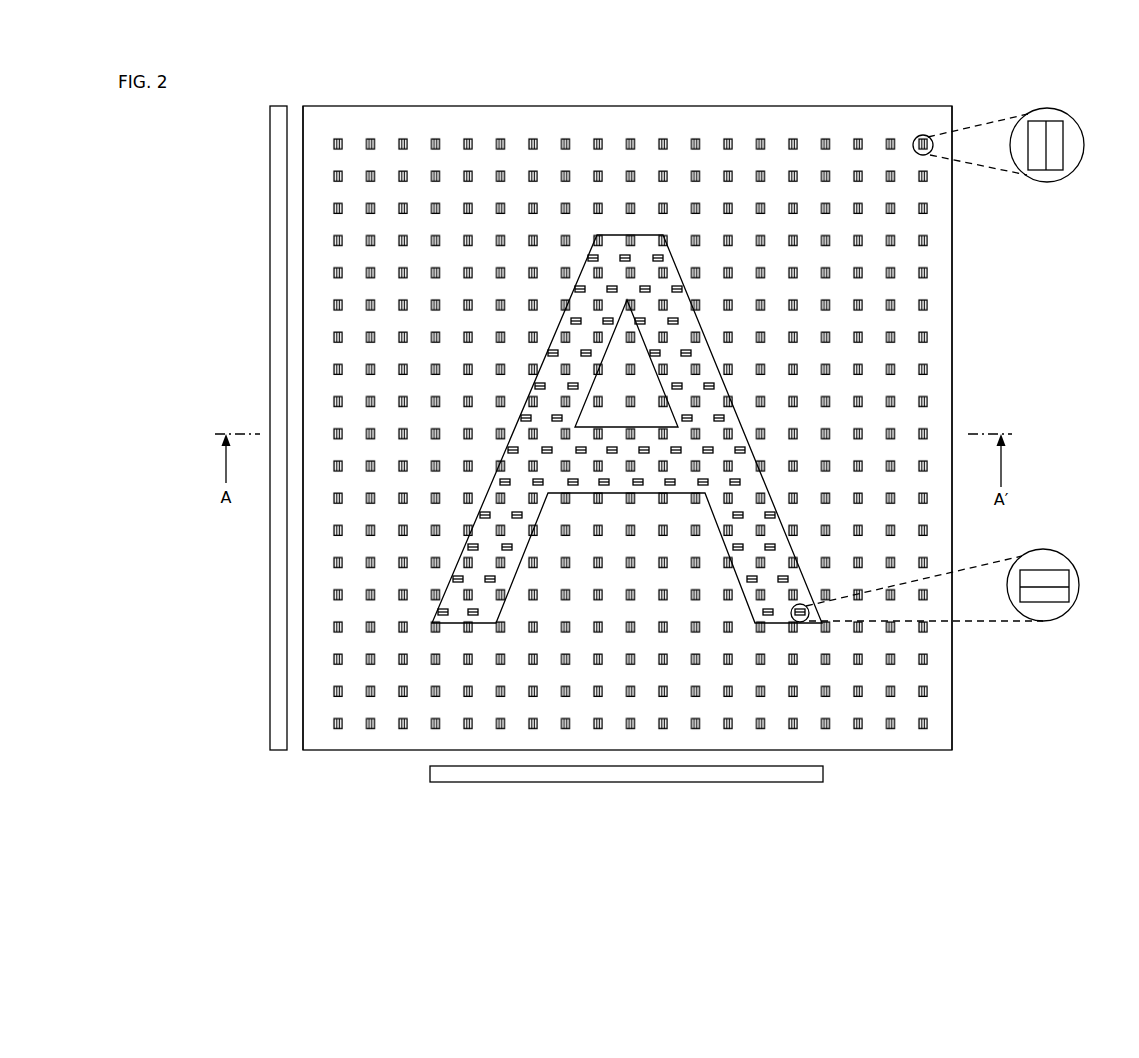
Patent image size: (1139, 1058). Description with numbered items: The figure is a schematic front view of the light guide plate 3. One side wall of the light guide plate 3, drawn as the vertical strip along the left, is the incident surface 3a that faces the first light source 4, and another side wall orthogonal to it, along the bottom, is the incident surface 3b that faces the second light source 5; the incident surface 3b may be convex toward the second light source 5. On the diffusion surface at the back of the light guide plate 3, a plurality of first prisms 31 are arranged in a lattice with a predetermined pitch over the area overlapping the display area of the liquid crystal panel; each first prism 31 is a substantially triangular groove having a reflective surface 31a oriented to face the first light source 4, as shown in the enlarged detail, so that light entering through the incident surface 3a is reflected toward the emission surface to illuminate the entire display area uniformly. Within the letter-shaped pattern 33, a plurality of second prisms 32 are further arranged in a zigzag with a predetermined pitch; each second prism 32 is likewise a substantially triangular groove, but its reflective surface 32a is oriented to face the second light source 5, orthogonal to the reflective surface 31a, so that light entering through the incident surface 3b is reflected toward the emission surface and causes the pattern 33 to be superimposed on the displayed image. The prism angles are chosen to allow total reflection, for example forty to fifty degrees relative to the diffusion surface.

The light guide plate 3 is at (957, 665).
The incident surface 3a is at (300, 742).
The incident surface 3b is at (937, 750).
The first light source 4 is at (268, 715).
The second light source 5 is at (824, 774).
The first prism 31 is at (370, 730).
The reflective surface 31a is at (1037, 142).
The second prism 32 is at (438, 622).
The reflective surface 32a is at (1057, 597).
The pattern 33 is at (741, 425).